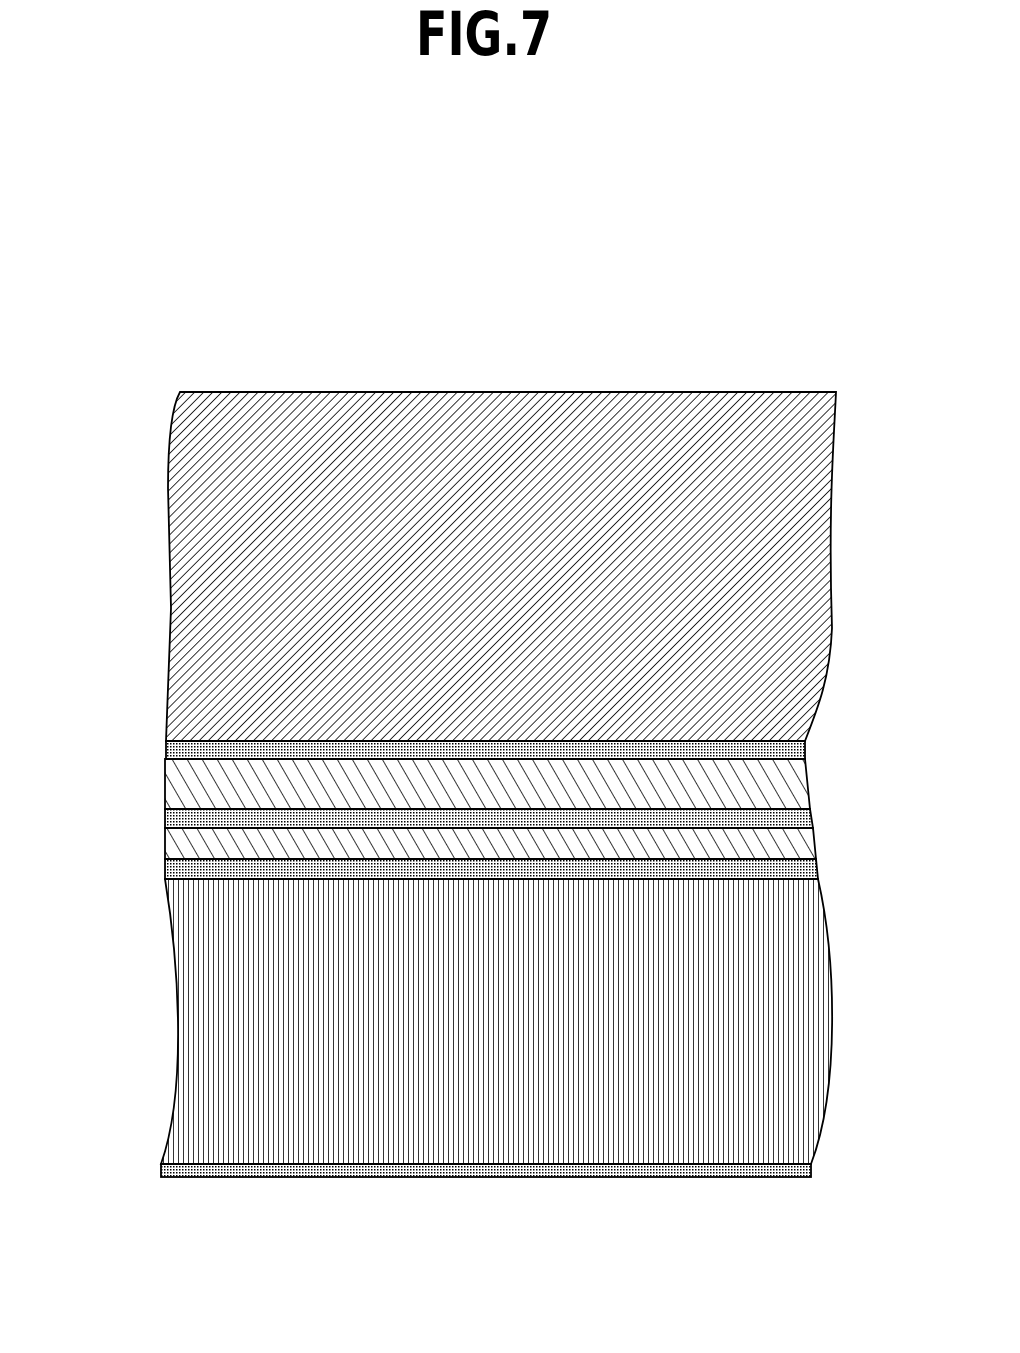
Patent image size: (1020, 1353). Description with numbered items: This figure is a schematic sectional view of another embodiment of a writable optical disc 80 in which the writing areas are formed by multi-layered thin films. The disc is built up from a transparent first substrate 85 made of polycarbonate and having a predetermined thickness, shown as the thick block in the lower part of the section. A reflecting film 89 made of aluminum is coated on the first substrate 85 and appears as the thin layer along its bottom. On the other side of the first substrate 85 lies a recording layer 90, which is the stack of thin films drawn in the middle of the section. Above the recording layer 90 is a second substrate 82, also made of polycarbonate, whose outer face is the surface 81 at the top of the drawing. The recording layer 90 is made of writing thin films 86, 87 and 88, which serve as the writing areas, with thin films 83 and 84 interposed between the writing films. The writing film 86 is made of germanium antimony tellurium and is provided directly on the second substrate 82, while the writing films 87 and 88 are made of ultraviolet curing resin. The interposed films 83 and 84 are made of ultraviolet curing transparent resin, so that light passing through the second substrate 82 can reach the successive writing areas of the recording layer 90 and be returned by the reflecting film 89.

The optical writable disc 80 is at (545, 360).
The surface 81 is at (350, 385).
The second substrate 82 is at (702, 413).
The thin film 83 is at (770, 775).
The thin film 84 is at (785, 833).
The first substrate 85 is at (792, 1043).
The writing thin film 86 is at (768, 722).
The writing thin film 87 is at (200, 806).
The writing thin film 88 is at (212, 868).
The reflecting film 89 is at (553, 1170).
The recording layer 90 is at (822, 761).